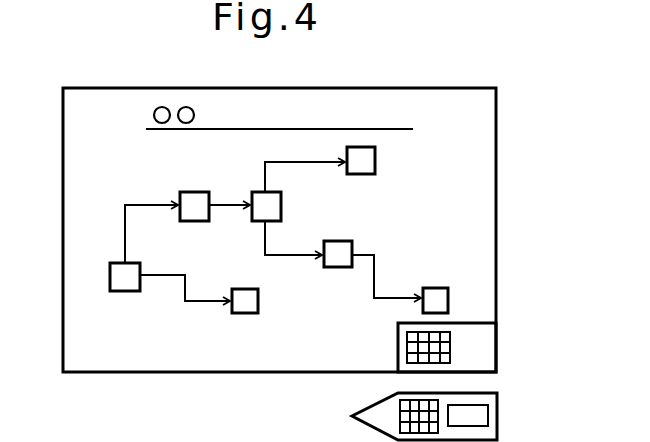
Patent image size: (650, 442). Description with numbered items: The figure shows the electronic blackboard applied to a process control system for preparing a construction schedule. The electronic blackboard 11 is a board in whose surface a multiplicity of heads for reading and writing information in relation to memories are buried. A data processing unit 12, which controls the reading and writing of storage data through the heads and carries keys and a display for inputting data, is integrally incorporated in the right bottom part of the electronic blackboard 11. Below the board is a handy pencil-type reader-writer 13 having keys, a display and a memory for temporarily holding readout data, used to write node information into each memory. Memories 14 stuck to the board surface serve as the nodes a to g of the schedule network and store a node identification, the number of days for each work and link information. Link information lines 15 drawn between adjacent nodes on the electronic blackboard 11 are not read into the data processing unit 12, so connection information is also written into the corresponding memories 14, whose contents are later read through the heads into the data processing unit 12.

The electronic blackboard 11 is at (496, 125).
The data processing unit 12 is at (498, 338).
The reader-writer 13 is at (498, 415).
The memories 14 is at (110, 283).
The link information lines 15 is at (149, 205).